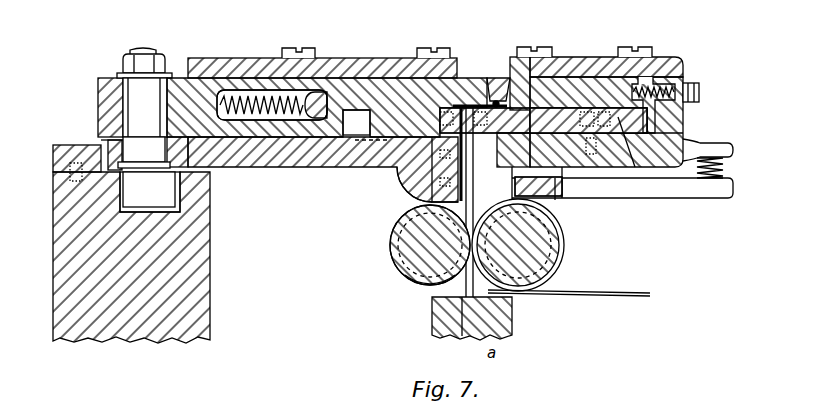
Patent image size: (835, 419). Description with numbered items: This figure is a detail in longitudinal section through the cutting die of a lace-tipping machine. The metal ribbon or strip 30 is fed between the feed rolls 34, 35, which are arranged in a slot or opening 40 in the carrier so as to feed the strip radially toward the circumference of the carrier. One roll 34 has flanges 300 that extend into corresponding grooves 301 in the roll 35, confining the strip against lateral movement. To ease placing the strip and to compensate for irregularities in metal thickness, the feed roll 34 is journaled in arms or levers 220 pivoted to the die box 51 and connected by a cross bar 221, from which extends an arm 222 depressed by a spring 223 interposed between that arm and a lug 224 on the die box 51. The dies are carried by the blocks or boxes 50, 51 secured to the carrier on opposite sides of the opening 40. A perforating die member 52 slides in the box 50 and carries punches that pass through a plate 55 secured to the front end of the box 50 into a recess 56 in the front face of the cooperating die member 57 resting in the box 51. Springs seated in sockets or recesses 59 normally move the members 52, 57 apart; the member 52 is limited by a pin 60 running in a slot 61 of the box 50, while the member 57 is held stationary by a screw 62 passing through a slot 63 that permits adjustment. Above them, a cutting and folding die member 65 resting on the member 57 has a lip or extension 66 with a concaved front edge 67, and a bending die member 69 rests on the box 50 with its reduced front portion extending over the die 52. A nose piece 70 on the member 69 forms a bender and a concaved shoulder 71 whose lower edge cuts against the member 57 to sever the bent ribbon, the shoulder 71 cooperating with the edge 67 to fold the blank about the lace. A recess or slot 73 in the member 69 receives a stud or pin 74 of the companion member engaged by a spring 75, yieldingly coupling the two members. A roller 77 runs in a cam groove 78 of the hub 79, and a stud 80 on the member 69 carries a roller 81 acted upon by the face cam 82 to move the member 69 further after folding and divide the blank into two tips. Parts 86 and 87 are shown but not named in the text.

The ribbon or strip 30 is at (632, 295).
The feed roll 34 is at (548, 247).
The feed roll 35 is at (398, 247).
The slot or opening 40 is at (508, 304).
The die block or box 50 is at (283, 167).
The die block or box 51 is at (635, 167).
The perforating die member 52 is at (397, 125).
The plate 55 is at (428, 178).
The recess 56 is at (476, 130).
The die member 57 is at (580, 118).
The sockets or recesses 59 is at (432, 115).
The pin 60 is at (368, 155).
The slot 61 is at (342, 157).
The screw 62 is at (612, 118).
The slot 63 is at (642, 158).
The cutting and folding die member 65 is at (577, 77).
The lip or extension 66 is at (509, 79).
The concaved front edge 67 is at (494, 103).
The bending die member 69 is at (241, 86).
The nose piece or bender 70 is at (498, 101).
The concaved shoulder 71 is at (486, 97).
The recess or slot 73 is at (237, 92).
The stud or pin 74 is at (323, 92).
The spring 75 is at (259, 97).
The roller 77 is at (163, 193).
The cam groove 78 is at (173, 208).
The cam hub 79 is at (200, 256).
The stud 80 is at (140, 98).
The roller 81 is at (110, 147).
The face cam 82 is at (53, 157).
The adjusting screw 86 is at (673, 73).
The screw head 87 is at (700, 90).
The arms or levers 220 is at (555, 200).
The cross bar 221 is at (562, 187).
The arm 222 is at (723, 192).
The spring 223 is at (724, 167).
The lug 224 is at (715, 146).
The flanges 300 is at (557, 273).
The grooves 301 is at (415, 285).